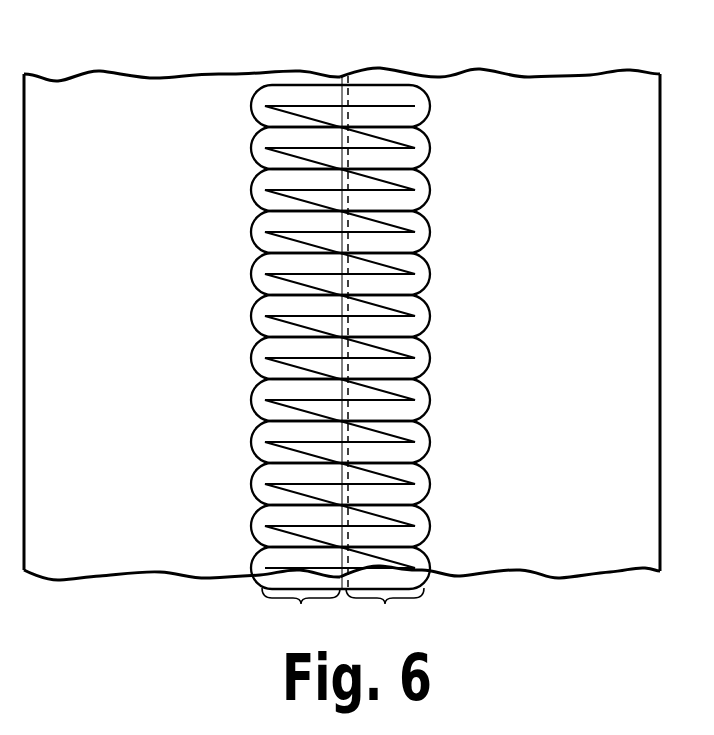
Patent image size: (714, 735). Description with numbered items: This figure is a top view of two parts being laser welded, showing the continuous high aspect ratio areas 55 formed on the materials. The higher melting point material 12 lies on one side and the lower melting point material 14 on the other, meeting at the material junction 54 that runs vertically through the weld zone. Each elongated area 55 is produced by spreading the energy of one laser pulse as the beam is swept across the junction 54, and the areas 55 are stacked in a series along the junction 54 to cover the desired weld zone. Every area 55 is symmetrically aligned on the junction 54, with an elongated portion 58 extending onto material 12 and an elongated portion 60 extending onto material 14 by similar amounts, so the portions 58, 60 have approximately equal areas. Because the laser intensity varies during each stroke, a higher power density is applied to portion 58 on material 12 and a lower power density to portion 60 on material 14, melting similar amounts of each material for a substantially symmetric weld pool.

The material 12 is at (153, 350).
The material 14 is at (495, 347).
The material junction 54 is at (344, 110).
The continuous high aspect ratio area 55 is at (430, 115).
The elongated portion 58 is at (301, 613).
The elongated portion 60 is at (385, 613).